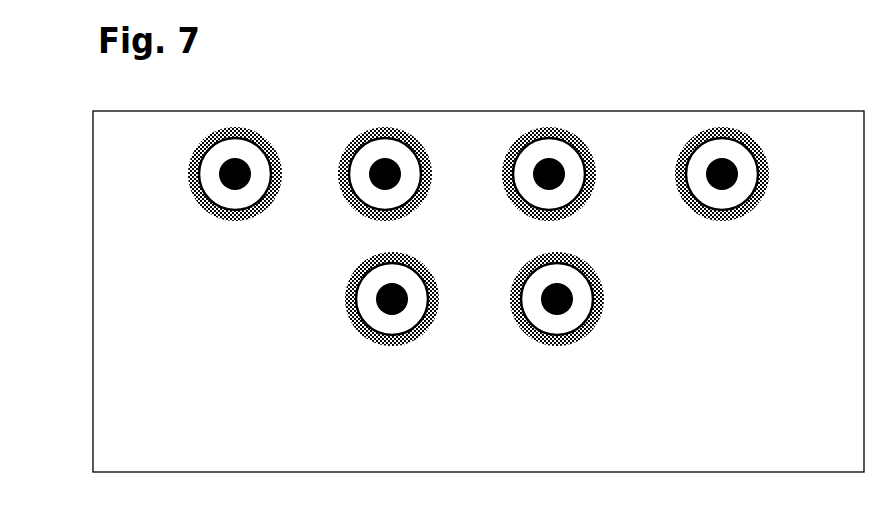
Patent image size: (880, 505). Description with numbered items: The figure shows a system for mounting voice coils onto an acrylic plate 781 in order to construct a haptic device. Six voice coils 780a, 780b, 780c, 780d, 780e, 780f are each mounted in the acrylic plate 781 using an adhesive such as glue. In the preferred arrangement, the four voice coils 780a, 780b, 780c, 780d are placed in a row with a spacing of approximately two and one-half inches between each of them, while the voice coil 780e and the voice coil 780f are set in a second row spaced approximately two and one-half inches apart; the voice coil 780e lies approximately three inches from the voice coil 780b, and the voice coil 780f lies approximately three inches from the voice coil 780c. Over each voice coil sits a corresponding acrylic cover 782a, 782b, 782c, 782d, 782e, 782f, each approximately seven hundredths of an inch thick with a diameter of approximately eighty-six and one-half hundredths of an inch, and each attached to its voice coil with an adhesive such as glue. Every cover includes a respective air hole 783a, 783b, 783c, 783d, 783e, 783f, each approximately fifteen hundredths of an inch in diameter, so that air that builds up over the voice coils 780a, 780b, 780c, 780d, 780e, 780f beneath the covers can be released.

The acrylic plate 781 is at (555, 463).
The voice coil 780a is at (188, 175).
The voice coil 780b is at (337, 175).
The voice coil 780c is at (597, 175).
The voice coil 780d is at (770, 175).
The voice coil 780e is at (344, 300).
The voice coil 780f is at (605, 302).
The acrylic cover 782a is at (235, 221).
The acrylic cover 782b is at (382, 137).
The acrylic cover 782c is at (553, 137).
The acrylic cover 782d is at (722, 221).
The acrylic cover 782e is at (392, 346).
The acrylic cover 782f is at (557, 346).
The air hole 783a is at (233, 153).
The air hole 783b is at (401, 168).
The air hole 783c is at (533, 170).
The air hole 783d is at (723, 150).
The air hole 783e is at (410, 292).
The air hole 783f is at (540, 303).